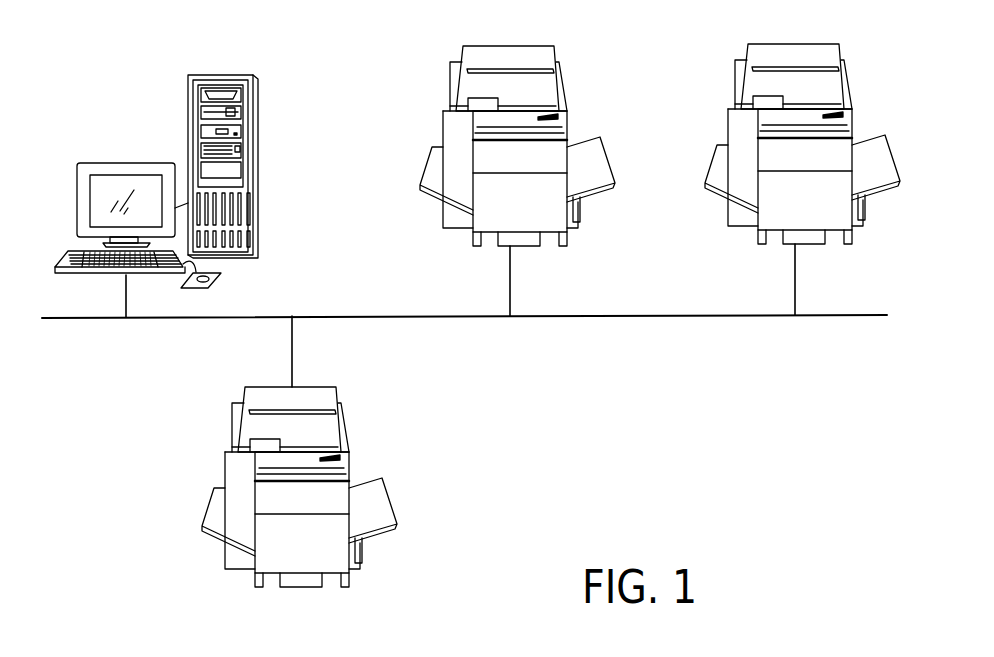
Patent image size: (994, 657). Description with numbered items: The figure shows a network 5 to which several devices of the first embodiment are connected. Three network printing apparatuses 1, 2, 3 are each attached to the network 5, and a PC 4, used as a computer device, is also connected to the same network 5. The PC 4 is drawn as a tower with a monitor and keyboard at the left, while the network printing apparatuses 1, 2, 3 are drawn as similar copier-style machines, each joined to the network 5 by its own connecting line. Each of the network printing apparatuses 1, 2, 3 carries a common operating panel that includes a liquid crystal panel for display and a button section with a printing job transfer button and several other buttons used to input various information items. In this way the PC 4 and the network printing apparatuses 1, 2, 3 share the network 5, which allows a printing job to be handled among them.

The network printing apparatus 1 is at (802, 122).
The network printing apparatus 2 is at (517, 124).
The network printing apparatus 3 is at (283, 487).
The PC 4 is at (243, 75).
The network 5 is at (852, 316).